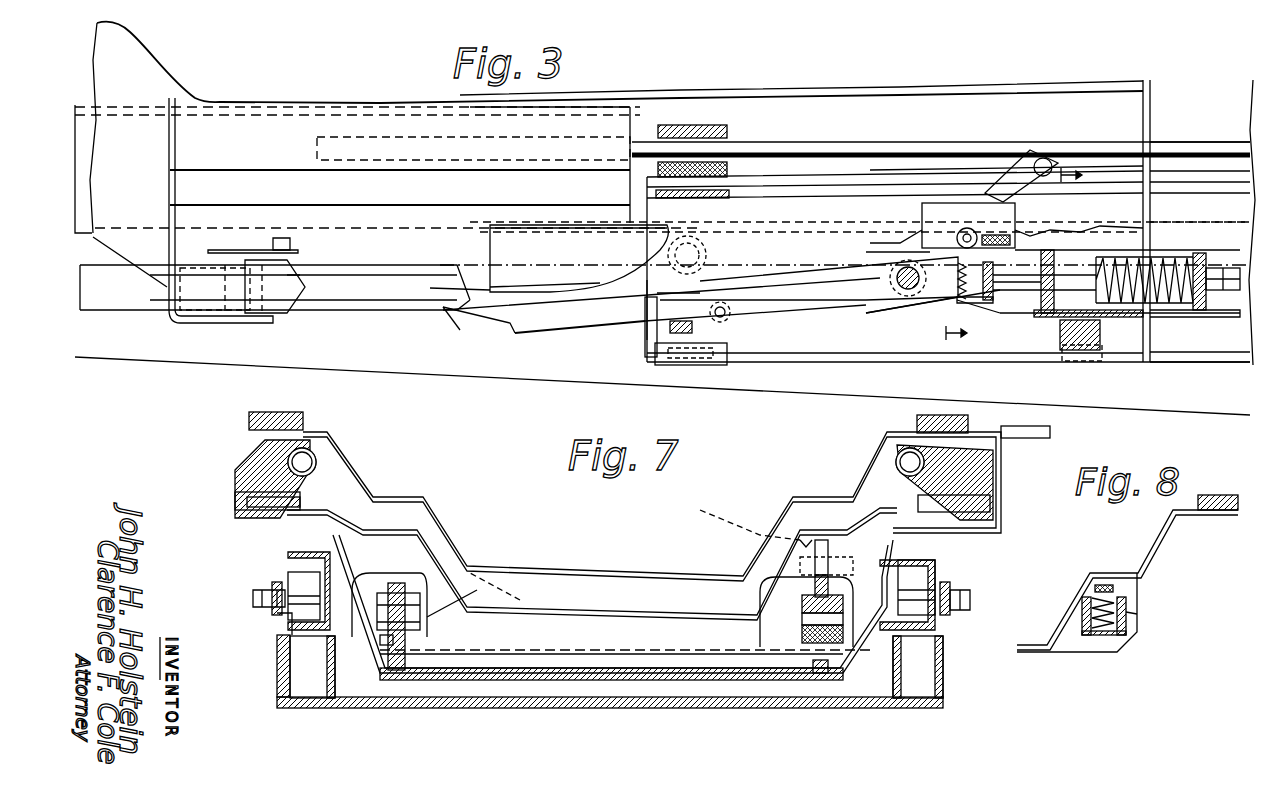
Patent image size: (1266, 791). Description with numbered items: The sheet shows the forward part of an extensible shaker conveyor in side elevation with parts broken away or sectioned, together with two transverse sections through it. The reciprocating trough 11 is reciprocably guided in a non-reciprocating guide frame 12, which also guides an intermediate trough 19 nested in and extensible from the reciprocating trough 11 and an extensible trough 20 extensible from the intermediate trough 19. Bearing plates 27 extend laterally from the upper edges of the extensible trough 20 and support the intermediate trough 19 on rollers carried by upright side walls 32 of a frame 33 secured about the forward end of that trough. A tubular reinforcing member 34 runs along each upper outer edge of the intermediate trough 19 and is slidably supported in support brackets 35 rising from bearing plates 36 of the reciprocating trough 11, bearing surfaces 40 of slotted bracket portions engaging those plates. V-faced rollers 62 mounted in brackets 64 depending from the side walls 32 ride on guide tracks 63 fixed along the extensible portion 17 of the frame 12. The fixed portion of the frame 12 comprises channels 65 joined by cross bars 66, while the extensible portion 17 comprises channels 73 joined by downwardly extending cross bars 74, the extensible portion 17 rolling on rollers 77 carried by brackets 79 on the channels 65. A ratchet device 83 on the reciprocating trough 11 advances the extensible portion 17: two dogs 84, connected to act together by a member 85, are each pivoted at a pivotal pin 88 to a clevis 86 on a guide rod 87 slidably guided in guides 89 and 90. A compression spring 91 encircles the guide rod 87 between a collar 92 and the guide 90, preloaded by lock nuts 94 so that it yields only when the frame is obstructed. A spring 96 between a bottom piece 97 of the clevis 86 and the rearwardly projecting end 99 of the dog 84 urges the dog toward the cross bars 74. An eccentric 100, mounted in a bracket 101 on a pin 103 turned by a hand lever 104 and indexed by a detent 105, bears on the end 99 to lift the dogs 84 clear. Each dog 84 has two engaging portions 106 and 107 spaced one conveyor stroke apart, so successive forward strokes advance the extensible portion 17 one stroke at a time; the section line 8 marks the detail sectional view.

In FIG. 3, the section line 8- 8 is at (1021, 254).
In FIG. 3, the reciprocating trough 11 is at (875, 140).
In FIG. 7, the reciprocating trough 11 is at (633, 650).
In FIG. 8, the reciprocating trough 11 is at (1148, 555).
In FIG. 3, the guide frame 12 is at (1212, 365).
In FIG. 7, the guide frame 12 is at (272, 682).
In FIG. 7, the extensible portion of the frame 17 is at (508, 655).
In FIG. 3, the intermediate trough 19 is at (950, 160).
In FIG. 7, the intermediate trough 19 is at (660, 613).
In FIG. 3, the extensible trough 20 is at (1246, 106).
In FIG. 7, the extensible trough 20 is at (668, 572).
In FIG. 3, the bearing plates 27 is at (770, 90).
In FIG. 7, the bearing plates 27 is at (276, 412).
In FIG. 3, the upright side walls 32 is at (145, 70).
In FIG. 3, the frame 33 is at (110, 240).
In FIG. 3, the tubular reinforcing member 34 is at (790, 148).
In FIG. 7, the tubular reinforcing member 34 is at (316, 455).
In FIG. 3, the support brackets 35 is at (720, 125).
In FIG. 7, the support brackets 35 is at (262, 465).
In FIG. 3, the bearing plates 36 is at (1168, 183).
In FIG. 7, the bearing plates 36 is at (300, 502).
In FIG. 8, the bearing plates 36 is at (1222, 495).
In FIG. 7, the bearing surfaces 40 is at (232, 500).
In FIG. 3, the supporting and guiding rollers 62 is at (278, 305).
In FIG. 3, the guide tracks 63 is at (368, 298).
In FIG. 3, the brackets 64 is at (238, 318).
In FIG. 3, the channels 65 is at (905, 350).
In FIG. 7, the channels 65 is at (310, 700).
In FIG. 3, the cross bars 66 is at (735, 368).
In FIG. 7, the cross bars 66 is at (612, 710).
In FIG. 3, the channels 73 is at (545, 280).
In FIG. 7, the channels 73 is at (324, 555).
In FIG. 3, the cross bars 74 is at (660, 330).
In FIG. 7, the cross bars 74 is at (716, 685).
In FIG. 3, the rollers 77 is at (625, 248).
In FIG. 7, the rollers 77 is at (295, 572).
In FIG. 3, the brackets 79 is at (583, 270).
In FIG. 7, the brackets 79 is at (272, 628).
In FIG. 3, the ratchet device 83 is at (862, 305).
In FIG. 7, the ratchet device 83 is at (800, 540).
In FIG. 7, the dogs 84 is at (392, 690).
In FIG. 7, the member 85 is at (430, 640).
In FIG. 3, the clevis 86 is at (905, 300).
In FIG. 7, the clevis 86 is at (400, 590).
In FIG. 8, the clevis 86 is at (1128, 620).
In FIG. 3, the guide rod 87 is at (1030, 290).
In FIG. 3, the pivotal pin 88 is at (892, 278).
In FIG. 7, the pivotal pin 88 is at (465, 570).
In FIG. 3, the guide 89 is at (1054, 266).
In FIG. 7, the guide 89 is at (365, 590).
In FIG. 8, the guide 89 is at (1130, 610).
In FIG. 3, the guide 90 is at (1208, 265).
In FIG. 3, the compression spring 91 is at (1172, 310).
In FIG. 3, the collar 92 is at (1088, 250).
In FIG. 3, the lock nuts 94 is at (1225, 300).
In FIG. 3, the spring 96 is at (995, 270).
In FIG. 8, the spring 96 is at (1112, 595).
In FIG. 3, the bottom piece 97 is at (975, 305).
In FIG. 8, the bottom piece 97 is at (1095, 640).
In FIG. 3, the rearwardly projecting end 99 is at (975, 270).
In FIG. 8, the rearwardly projecting end 99 is at (1098, 580).
In FIG. 3, the eccentric 100 is at (925, 210).
In FIG. 7, the eccentric 100 is at (822, 540).
In FIG. 3, the bracket 101 is at (870, 234).
In FIG. 7, the bracket 101 is at (840, 557).
In FIG. 3, the pin 103 is at (965, 230).
In FIG. 7, the pin 103 is at (655, 515).
In FIG. 3, the hand lever 104 is at (1043, 158).
In FIG. 7, the hand lever 104 is at (1040, 432).
In FIG. 3, the detent 105 is at (1015, 205).
In FIG. 3, the engaging portion 106 is at (510, 330).
In FIG. 3, the engaging portion 107 is at (700, 340).